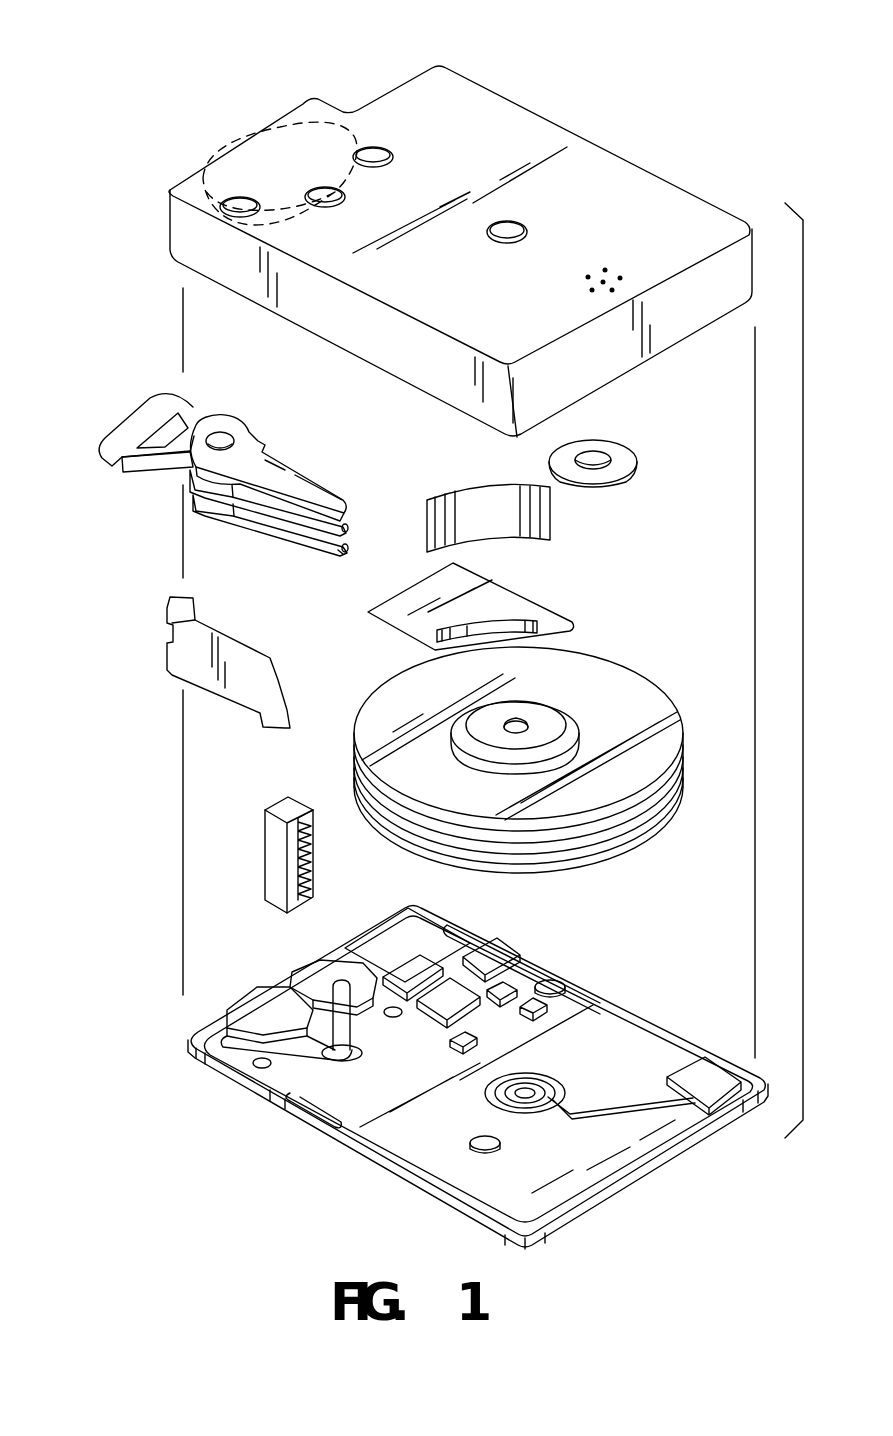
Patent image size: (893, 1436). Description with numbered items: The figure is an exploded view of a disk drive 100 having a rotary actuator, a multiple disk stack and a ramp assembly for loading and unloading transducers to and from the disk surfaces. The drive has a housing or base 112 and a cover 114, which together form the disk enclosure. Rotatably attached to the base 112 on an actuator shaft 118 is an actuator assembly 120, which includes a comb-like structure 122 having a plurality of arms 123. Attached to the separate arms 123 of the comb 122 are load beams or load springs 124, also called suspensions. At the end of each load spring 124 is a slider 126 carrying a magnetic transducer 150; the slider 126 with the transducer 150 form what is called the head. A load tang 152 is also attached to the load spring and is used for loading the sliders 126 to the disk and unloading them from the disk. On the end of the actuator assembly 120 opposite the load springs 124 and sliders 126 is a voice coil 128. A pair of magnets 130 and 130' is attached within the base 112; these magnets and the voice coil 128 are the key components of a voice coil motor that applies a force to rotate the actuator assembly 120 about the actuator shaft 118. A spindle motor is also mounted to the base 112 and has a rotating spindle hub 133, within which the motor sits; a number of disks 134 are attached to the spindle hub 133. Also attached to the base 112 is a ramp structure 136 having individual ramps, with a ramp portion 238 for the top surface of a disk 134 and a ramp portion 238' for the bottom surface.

The disk drive 100 is at (615, 100).
The base 112 is at (655, 1045).
The cover 114 is at (628, 187).
The actuator shaft 118 is at (220, 437).
The actuator assembly 120 is at (157, 477).
The comb-like structure 122 is at (225, 518).
The arms 123 is at (258, 437).
The load springs 124 is at (305, 488).
The slider 126 is at (344, 546).
The voice coil 128 is at (130, 415).
The magnet 130 is at (282, 994).
The magnet 130' is at (272, 148).
The spindle hub 133 is at (522, 720).
The disks 134 is at (650, 702).
The ramp structure 136 is at (268, 850).
The magnetic transducer 150 is at (346, 549).
The load tang 152 is at (343, 558).
The ramp portion 238 is at (266, 778).
The ramp portion 238' is at (345, 859).